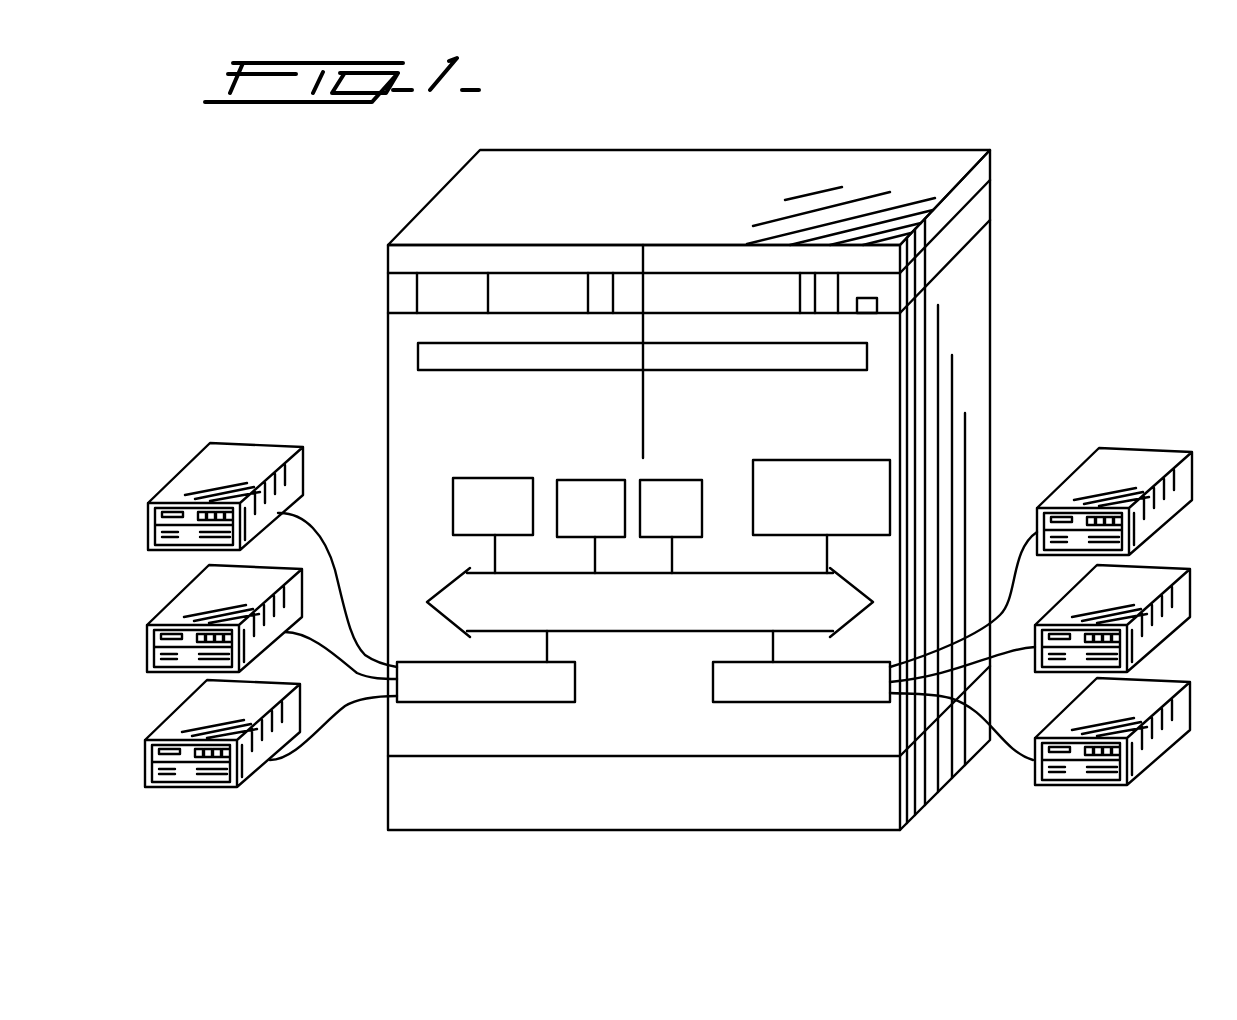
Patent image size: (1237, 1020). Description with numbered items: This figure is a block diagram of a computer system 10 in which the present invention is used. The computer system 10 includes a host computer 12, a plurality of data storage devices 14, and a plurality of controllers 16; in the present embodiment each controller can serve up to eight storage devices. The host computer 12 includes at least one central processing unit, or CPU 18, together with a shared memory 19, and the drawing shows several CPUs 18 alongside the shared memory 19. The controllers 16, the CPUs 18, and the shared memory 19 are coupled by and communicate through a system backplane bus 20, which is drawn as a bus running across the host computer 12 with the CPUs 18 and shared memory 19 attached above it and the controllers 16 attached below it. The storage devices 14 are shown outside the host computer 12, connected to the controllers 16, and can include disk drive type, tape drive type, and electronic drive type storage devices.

The computer system 10 is at (935, 131).
The host computer 12 is at (978, 271).
The data storage devices 14 is at (1148, 687).
The controllers 16 is at (773, 693).
The central processing unit (CPU) 18 is at (680, 487).
The shared memory 19 is at (842, 470).
The system backplane bus 20 is at (456, 592).